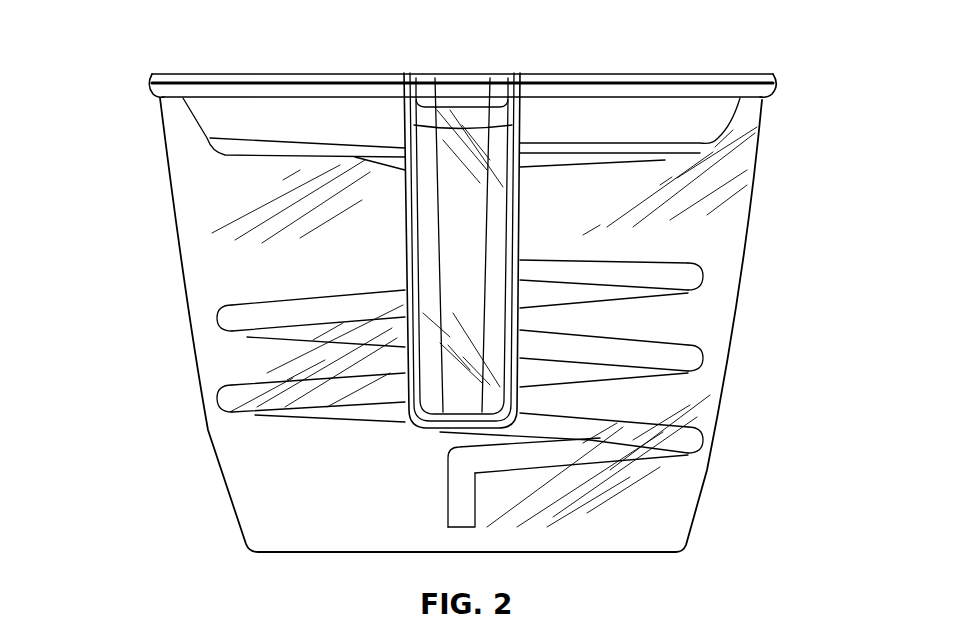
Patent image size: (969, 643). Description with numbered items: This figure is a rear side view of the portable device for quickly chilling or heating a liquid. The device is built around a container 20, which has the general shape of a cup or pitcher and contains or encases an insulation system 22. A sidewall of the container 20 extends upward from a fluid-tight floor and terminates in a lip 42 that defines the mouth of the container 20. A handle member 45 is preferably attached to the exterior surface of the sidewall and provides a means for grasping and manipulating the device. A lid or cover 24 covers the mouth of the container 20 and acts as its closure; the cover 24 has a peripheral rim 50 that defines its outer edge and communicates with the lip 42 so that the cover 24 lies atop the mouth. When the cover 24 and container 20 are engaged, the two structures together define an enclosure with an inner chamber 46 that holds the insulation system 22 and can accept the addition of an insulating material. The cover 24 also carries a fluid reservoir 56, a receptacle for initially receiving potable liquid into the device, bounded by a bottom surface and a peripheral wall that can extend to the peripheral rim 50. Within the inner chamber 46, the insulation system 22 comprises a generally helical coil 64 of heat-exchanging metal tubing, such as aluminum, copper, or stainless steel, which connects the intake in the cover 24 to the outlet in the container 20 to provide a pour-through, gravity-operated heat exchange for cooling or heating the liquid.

The container 20 is at (694, 521).
The insulation system 22 is at (222, 328).
The lid or cover 24 is at (775, 72).
The lip 42 is at (163, 92).
The handle member 45 is at (458, 96).
The inner chamber 46 is at (708, 242).
The peripheral rim 50 is at (156, 76).
The fluid reservoir 56 is at (263, 113).
The coil 64 is at (704, 346).